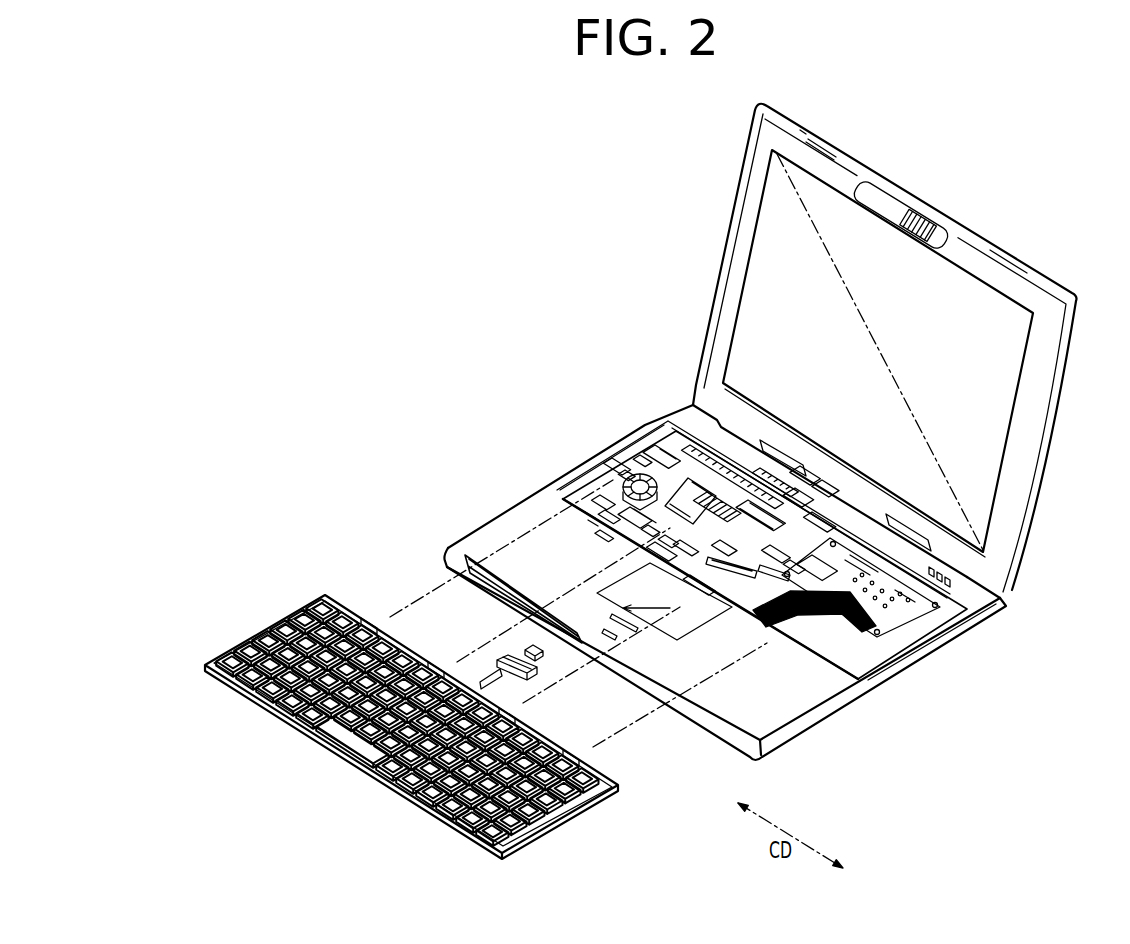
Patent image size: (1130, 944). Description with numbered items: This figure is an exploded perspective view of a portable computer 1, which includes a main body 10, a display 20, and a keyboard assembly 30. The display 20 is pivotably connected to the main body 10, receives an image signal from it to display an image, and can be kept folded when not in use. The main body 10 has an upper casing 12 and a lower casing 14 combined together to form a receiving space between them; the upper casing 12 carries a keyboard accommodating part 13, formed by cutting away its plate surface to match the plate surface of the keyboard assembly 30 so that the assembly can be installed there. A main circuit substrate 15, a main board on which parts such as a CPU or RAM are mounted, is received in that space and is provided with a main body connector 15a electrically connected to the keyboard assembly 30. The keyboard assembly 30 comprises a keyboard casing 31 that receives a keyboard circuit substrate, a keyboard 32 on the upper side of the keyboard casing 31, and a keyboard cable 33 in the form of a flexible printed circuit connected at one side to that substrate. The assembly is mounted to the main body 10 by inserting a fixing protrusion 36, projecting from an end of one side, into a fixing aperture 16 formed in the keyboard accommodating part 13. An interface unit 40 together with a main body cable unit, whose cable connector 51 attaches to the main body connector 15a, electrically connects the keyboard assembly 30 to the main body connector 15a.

The portable computer 1 is at (471, 301).
The main body 10 is at (553, 483).
The upper casing 12 is at (1000, 612).
The keyboard accommodating part 13 is at (585, 467).
The lower casing 14 is at (950, 645).
The main circuit substrate 15 is at (860, 655).
The main body connector 15a is at (782, 525).
The fixing aperture 16 is at (640, 438).
The display 20 is at (1057, 435).
The keyboard assembly 30 is at (262, 623).
The keyboard casing 31 is at (582, 813).
The keyboard 32 is at (367, 758).
The keyboard cable 33 is at (487, 675).
The fixing protrusion 36 is at (367, 617).
The interface unit 40 is at (528, 667).
The cable connector 51 is at (545, 657).